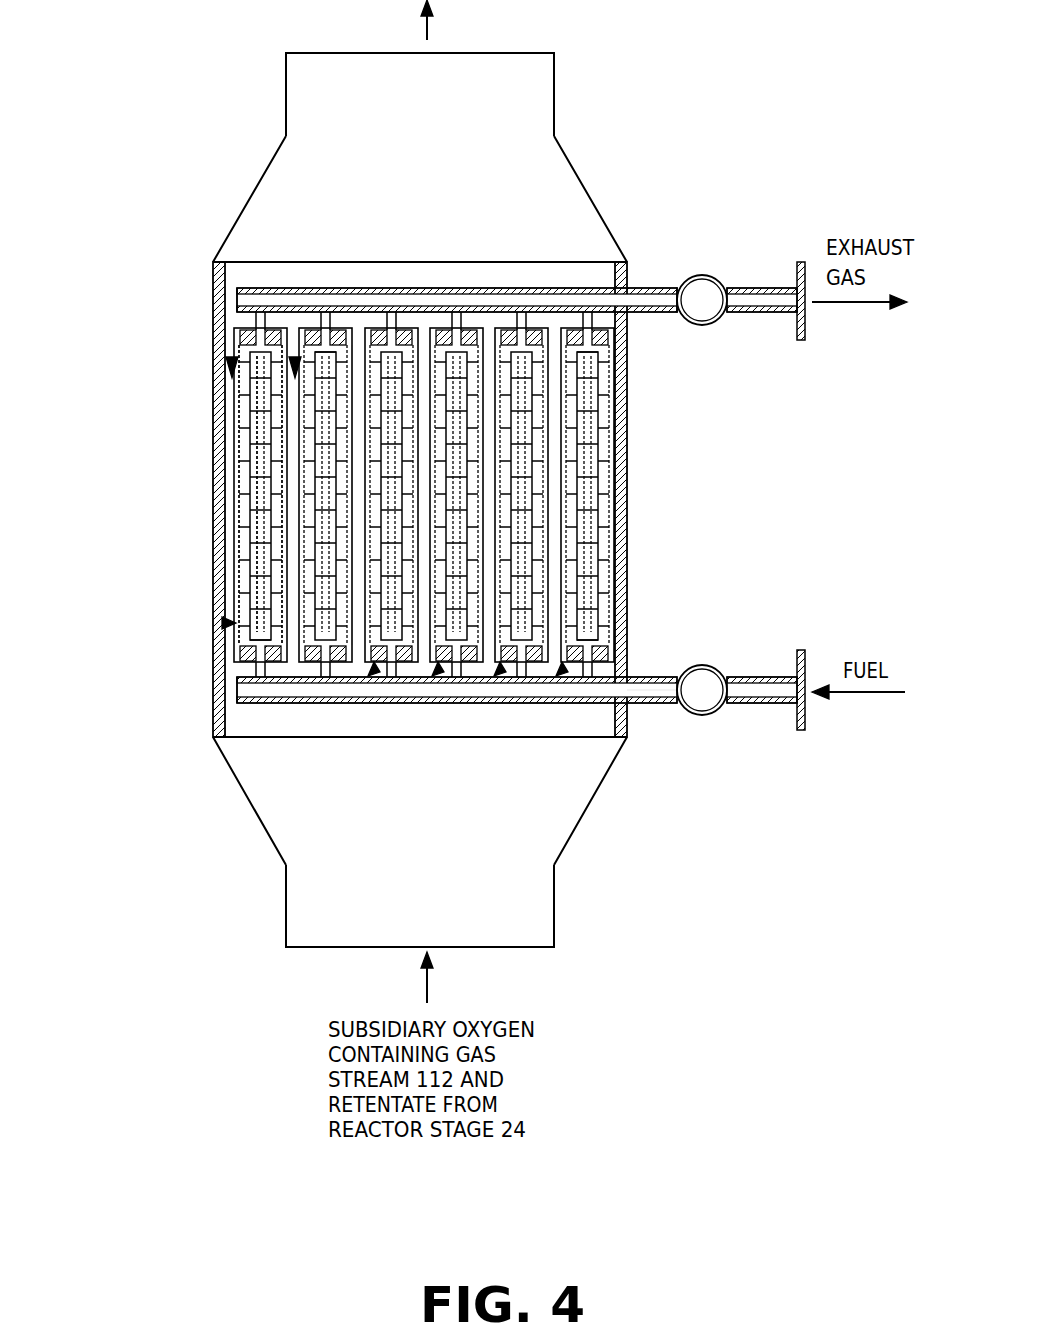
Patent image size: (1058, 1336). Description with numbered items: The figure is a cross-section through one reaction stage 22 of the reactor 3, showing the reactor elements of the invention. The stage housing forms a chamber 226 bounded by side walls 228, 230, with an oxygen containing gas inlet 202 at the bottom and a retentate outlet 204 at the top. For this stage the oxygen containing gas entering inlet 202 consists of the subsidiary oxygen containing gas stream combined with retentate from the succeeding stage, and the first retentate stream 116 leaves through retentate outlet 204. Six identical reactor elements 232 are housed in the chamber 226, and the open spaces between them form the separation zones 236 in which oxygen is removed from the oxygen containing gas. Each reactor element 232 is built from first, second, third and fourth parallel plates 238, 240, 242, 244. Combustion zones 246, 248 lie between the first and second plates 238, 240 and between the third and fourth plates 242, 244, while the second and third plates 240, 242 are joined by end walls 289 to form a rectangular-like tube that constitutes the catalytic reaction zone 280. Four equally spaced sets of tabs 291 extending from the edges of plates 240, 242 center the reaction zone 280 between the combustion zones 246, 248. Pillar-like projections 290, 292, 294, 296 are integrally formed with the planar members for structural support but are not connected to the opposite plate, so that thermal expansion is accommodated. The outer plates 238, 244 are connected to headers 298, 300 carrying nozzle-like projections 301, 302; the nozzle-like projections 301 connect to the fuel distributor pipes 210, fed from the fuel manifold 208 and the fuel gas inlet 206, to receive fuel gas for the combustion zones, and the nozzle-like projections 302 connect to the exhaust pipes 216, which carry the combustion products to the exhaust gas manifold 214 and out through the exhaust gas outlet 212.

The reactor 3 is at (822, 462).
The reaction stage 22 is at (640, 517).
The first retentate stream 116 is at (430, 28).
The oxygen containing gas inlet 202 is at (300, 842).
The retentate outlet 204 is at (568, 195).
The fuel gas inlet 206 is at (765, 707).
The fuel manifold 208 is at (707, 716).
The fuel distributor pipes 210 is at (655, 703).
The exhaust gas outlet 212 is at (760, 287).
The exhaust gas manifold 214 is at (712, 322).
The exhaust pipes 216 is at (650, 287).
The chamber 226 is at (233, 708).
The side wall 228 is at (213, 570).
The side wall 230 is at (628, 597).
The reactor elements 232 is at (243, 660).
The separation zones 236 is at (420, 350).
The first parallel plate 238 is at (240, 432).
The second parallel plate 240 is at (238, 416).
The third parallel plate 242 is at (253, 443).
The fourth parallel plate 244 is at (222, 402).
The combustion zone 246 is at (235, 358).
The combustion zone 248 is at (245, 595).
The catalytic reaction zone 280 is at (352, 350).
The end walls 289 is at (400, 328).
The pillar-like projections 290 is at (292, 632).
The tabs 291 is at (590, 374).
The pillar-like projections 292 is at (352, 665).
The pillar-like projections 294 is at (305, 340).
The pillar-like projections 296 is at (322, 363).
The header 298 is at (242, 660).
The header 300 is at (243, 327).
The nozzle-like projections 301 is at (236, 700).
The nozzle-like projections 302 is at (313, 325).